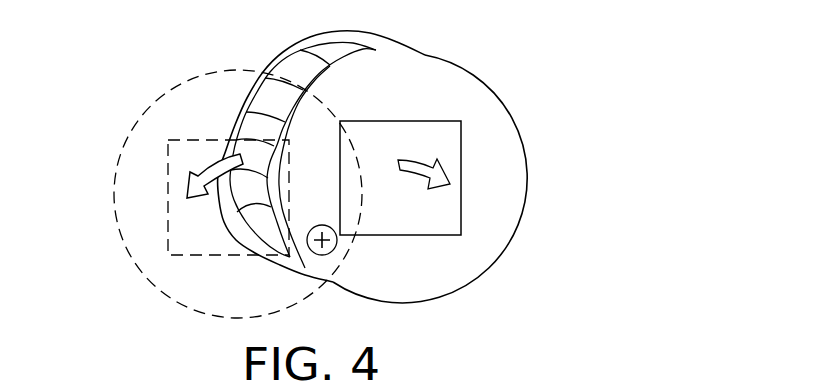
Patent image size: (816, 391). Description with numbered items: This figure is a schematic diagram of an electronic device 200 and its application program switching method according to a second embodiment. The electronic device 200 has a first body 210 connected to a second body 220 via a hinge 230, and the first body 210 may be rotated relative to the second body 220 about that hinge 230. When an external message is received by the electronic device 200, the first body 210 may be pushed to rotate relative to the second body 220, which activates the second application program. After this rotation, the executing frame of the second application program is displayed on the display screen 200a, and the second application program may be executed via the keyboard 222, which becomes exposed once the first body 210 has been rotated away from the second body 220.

The electronic device 200 is at (577, 343).
The display screen 200a is at (445, 128).
The first body 210 is at (119, 231).
The second body 220 is at (383, 50).
The keyboard 222 is at (296, 66).
The hinge 230 is at (332, 252).